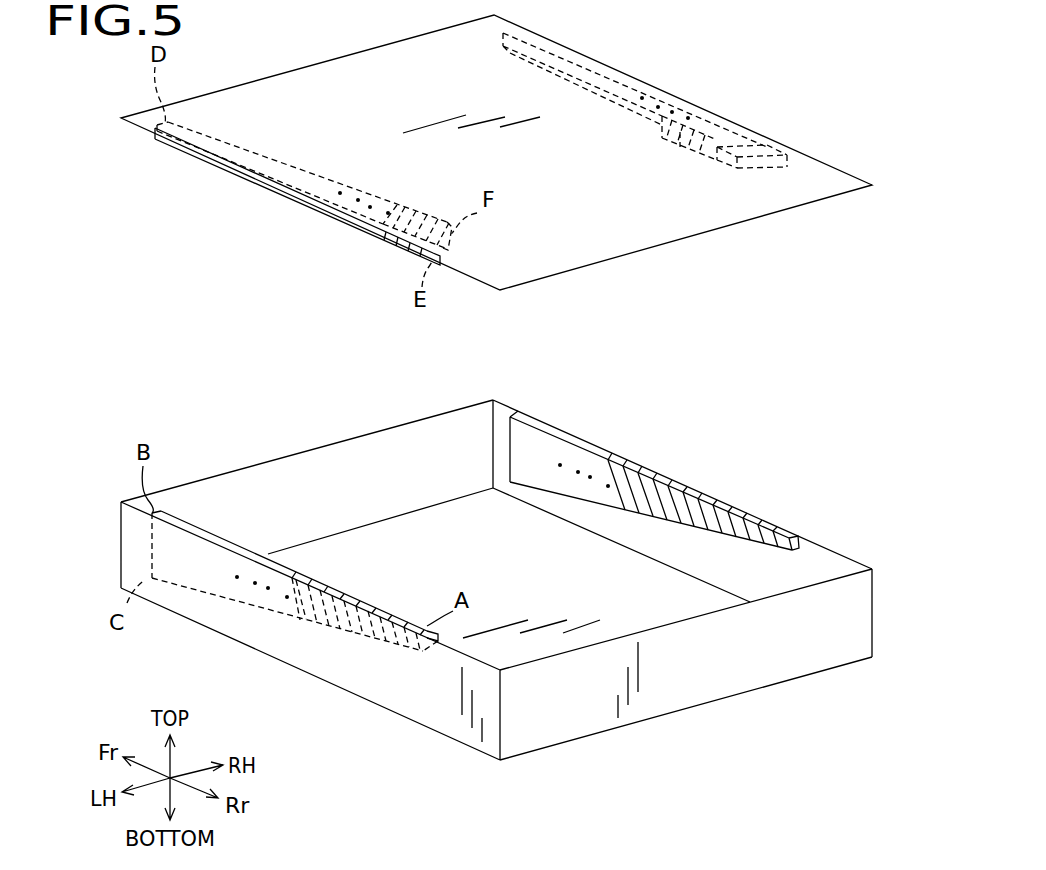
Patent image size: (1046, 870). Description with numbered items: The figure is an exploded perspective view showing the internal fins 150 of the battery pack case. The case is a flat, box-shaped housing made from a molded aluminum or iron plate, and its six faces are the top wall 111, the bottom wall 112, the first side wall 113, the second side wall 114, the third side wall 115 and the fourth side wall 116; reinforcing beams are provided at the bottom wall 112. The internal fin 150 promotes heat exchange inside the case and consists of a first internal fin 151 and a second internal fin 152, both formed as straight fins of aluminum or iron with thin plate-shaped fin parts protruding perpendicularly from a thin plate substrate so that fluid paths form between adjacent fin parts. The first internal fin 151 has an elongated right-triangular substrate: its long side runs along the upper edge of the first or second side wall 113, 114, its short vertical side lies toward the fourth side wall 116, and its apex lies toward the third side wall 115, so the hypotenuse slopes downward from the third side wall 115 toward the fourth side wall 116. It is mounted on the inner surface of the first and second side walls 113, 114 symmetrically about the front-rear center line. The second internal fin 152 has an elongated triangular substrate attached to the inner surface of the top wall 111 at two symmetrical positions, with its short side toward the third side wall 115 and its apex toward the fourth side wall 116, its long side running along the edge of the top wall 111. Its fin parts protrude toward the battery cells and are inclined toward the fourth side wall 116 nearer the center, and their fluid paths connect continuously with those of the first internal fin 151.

The top wall 111 is at (338, 75).
The bottom wall 112 is at (490, 577).
The first side wall 113 is at (300, 645).
The second side wall 114 is at (513, 408).
The third side wall 115 is at (668, 690).
The fourth side wall 116 is at (288, 455).
The internal fin 150 is at (475, 340).
The first internal fin 151 is at (313, 580).
The second internal fin 152 is at (292, 205).